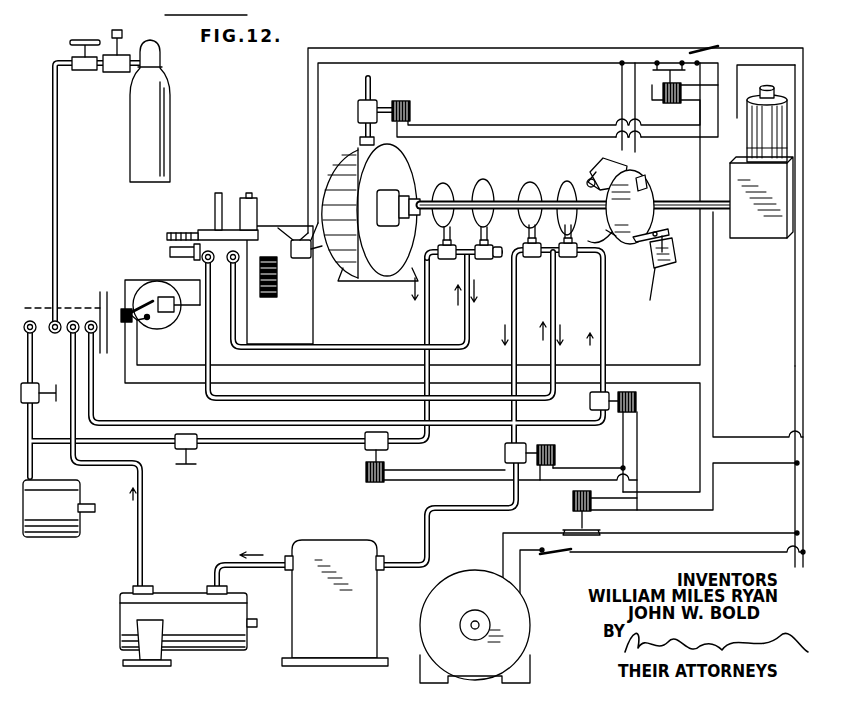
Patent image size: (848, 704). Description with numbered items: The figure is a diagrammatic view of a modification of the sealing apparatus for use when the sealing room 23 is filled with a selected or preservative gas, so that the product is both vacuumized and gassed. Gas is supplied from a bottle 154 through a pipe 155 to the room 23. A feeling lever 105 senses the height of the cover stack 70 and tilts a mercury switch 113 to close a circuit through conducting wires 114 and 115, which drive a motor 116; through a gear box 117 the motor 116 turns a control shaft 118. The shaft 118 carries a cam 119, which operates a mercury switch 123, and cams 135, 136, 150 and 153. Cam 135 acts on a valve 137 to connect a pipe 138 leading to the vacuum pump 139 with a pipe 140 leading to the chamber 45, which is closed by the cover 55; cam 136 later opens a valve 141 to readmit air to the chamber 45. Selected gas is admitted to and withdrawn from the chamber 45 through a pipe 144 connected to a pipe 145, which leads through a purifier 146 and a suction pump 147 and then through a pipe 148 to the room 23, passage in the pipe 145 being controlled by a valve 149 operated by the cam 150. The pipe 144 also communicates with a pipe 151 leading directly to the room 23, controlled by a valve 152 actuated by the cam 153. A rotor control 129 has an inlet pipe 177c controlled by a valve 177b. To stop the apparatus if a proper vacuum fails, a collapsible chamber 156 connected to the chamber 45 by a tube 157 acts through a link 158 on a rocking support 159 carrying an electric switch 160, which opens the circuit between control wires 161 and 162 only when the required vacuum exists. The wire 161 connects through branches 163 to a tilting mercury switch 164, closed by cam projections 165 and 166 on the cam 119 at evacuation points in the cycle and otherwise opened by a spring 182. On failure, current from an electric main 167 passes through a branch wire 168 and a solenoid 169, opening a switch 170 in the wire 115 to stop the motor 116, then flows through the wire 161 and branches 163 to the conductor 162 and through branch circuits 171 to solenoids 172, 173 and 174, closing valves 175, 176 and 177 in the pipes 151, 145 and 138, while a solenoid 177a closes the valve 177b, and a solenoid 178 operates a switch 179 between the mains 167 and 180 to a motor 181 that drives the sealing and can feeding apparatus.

The sealing room 23 is at (79, 313).
The chamber 45 is at (199, 213).
The cover 55 is at (232, 207).
The stack 70 is at (278, 292).
The feeling lever 105 is at (280, 285).
The mercury switch 113 is at (305, 234).
The conducting wire 114 is at (308, 130).
The conducting wire 115 is at (317, 110).
The motor 116 is at (786, 110).
The gear box 117 is at (757, 240).
The control shaft 118 is at (660, 203).
The cam 119 is at (632, 172).
The mercury switch 123 is at (600, 172).
The rotor control 129 is at (392, 161).
The cam 135 is at (447, 182).
The cam 136 is at (488, 180).
The valve 137 is at (447, 262).
The pipe 138 is at (45, 442).
The vacuum chamber or pump 139 is at (40, 537).
The pipe 140 is at (327, 347).
The valve 141 is at (484, 262).
The pipe 144 is at (215, 308).
The pipe 145 is at (516, 316).
The purifier 146 is at (345, 548).
The suction pump 147 is at (172, 590).
The pipe 148 is at (70, 367).
The valve 149 is at (532, 260).
The cam 150 is at (531, 182).
The pipe 151 is at (93, 396).
The valve 152 is at (568, 260).
The cam 153 is at (568, 181).
The bottle 154 is at (168, 101).
The pipe 155 is at (60, 200).
The collapsible chamber 156 is at (175, 316).
The pipe or tube 157 is at (182, 296).
The link 158 is at (160, 325).
The rocking support 159 is at (137, 330).
The electric switch 160 is at (132, 308).
The control wire 161 is at (157, 366).
The control wire 162 is at (152, 384).
The branches 163 is at (668, 252).
The tilting mercury switch 164 is at (658, 290).
The cam projection 165 is at (600, 231).
The cam projection 166 is at (648, 192).
The electric main 167 is at (797, 336).
The branch wire 168 is at (742, 437).
The solenoid 169 is at (663, 92).
The switch 170 is at (672, 63).
The branch circuits 171 is at (619, 466).
The solenoid 172 is at (640, 400).
The solenoid 173 is at (557, 453).
The solenoid 174 is at (386, 470).
The valve 175 is at (590, 404).
The valve 176 is at (505, 453).
The valve 177 is at (367, 443).
The solenoid 177a is at (412, 110).
The valve 177b is at (376, 105).
The inlet pipe 177c is at (366, 95).
The solenoid 178 is at (573, 505).
The switch 179 is at (597, 528).
The electric main 180 is at (797, 362).
The motor 181 is at (530, 612).
The spring 182 is at (664, 272).